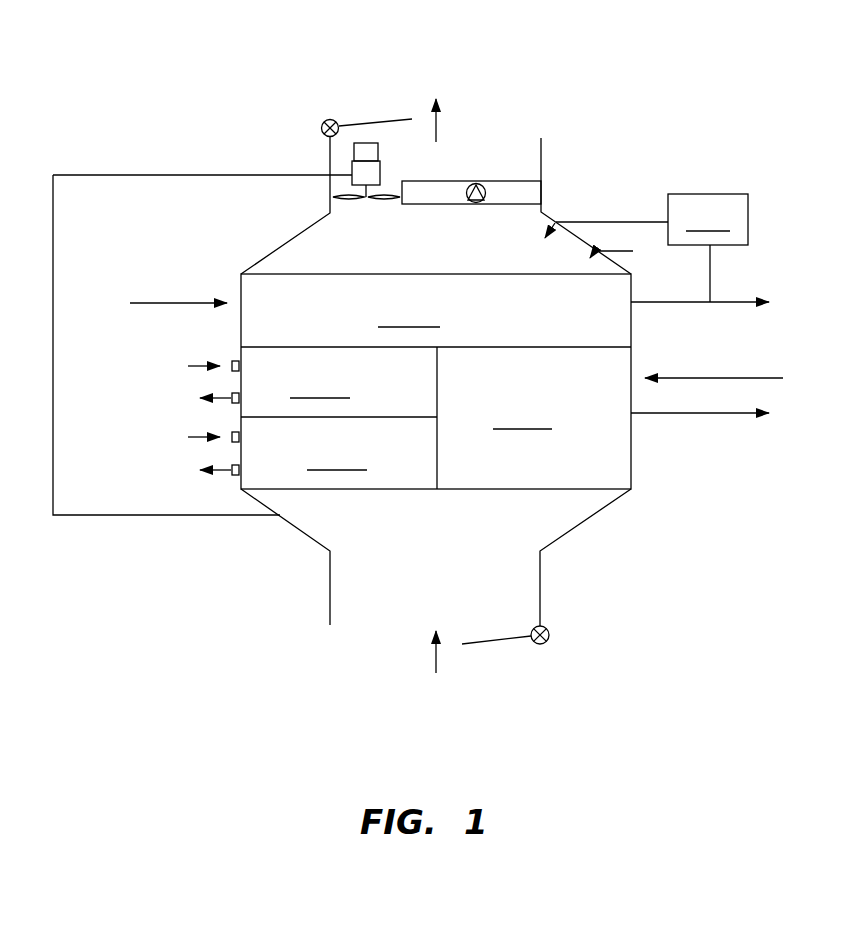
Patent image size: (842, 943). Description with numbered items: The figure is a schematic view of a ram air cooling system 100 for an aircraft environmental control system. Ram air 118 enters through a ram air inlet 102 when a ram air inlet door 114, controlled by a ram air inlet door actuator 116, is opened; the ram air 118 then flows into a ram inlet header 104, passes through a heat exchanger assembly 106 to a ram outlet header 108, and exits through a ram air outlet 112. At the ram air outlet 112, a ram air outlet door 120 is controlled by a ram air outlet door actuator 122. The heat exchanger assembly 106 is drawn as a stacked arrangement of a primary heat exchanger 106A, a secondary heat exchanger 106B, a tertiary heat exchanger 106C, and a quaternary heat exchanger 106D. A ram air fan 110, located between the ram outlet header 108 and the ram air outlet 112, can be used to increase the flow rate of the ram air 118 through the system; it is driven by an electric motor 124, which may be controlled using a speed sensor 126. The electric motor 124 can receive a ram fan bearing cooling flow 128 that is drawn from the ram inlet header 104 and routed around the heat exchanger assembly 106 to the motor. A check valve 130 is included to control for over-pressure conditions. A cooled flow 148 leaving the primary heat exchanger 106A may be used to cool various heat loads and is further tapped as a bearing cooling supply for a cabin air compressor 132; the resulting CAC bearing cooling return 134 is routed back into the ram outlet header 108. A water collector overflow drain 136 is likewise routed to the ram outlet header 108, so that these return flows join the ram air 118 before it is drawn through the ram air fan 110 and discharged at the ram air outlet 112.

The ram air cooling system 100 is at (158, 106).
The ram air inlet 102 is at (380, 630).
The ram inlet header 104 is at (542, 586).
The heat exchanger assembly 106 is at (663, 443).
The primary heat exchanger 106A is at (285, 314).
The secondary heat exchanger 106B is at (638, 403).
The tertiary heat exchanger 106C is at (269, 382).
The quaternary heat exchanger 106D is at (277, 453).
The ram outlet header 108 is at (313, 224).
The ram air fan 110 is at (382, 202).
The ram air outlet 112 is at (479, 113).
The ram air inlet door 114 is at (495, 642).
The ram air inlet door actuator 116 is at (550, 636).
The ram air 118 is at (435, 680).
The ram air outlet door 120 is at (367, 123).
The ram air outlet door actuator 122 is at (325, 122).
The electric motor 124 is at (373, 173).
The speed sensor 126 is at (353, 152).
The ram fan bearing cooling flow 128 is at (187, 515).
The check valve 130 is at (525, 193).
The cabin air compressor 132 is at (708, 248).
The CAC bearing cooling return 134 is at (622, 222).
The water collector overflow drain 136 is at (633, 251).
The cooled flow 148 is at (675, 303).